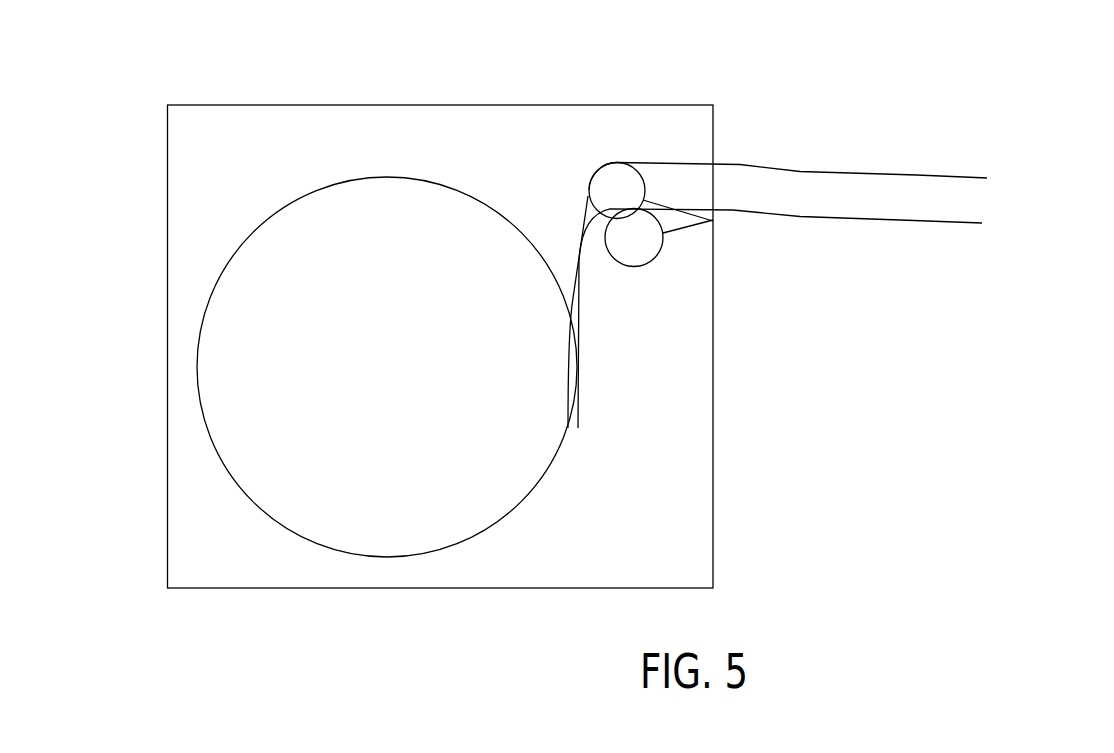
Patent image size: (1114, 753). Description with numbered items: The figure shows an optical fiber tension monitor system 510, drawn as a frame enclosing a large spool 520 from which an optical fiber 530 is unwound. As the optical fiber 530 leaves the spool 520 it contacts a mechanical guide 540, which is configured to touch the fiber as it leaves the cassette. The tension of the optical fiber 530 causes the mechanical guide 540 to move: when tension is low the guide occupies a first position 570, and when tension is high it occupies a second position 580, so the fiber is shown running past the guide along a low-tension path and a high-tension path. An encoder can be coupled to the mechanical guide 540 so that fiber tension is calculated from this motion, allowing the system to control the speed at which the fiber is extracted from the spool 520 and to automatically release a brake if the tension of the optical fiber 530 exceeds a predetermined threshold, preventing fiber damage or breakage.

The optical fiber tension monitor system 510 is at (358, 103).
The spool 520 is at (332, 197).
The optical fiber 530 is at (580, 253).
The mechanical guide 540 is at (566, 171).
The first position 570 is at (643, 182).
The second position 580 is at (663, 238).